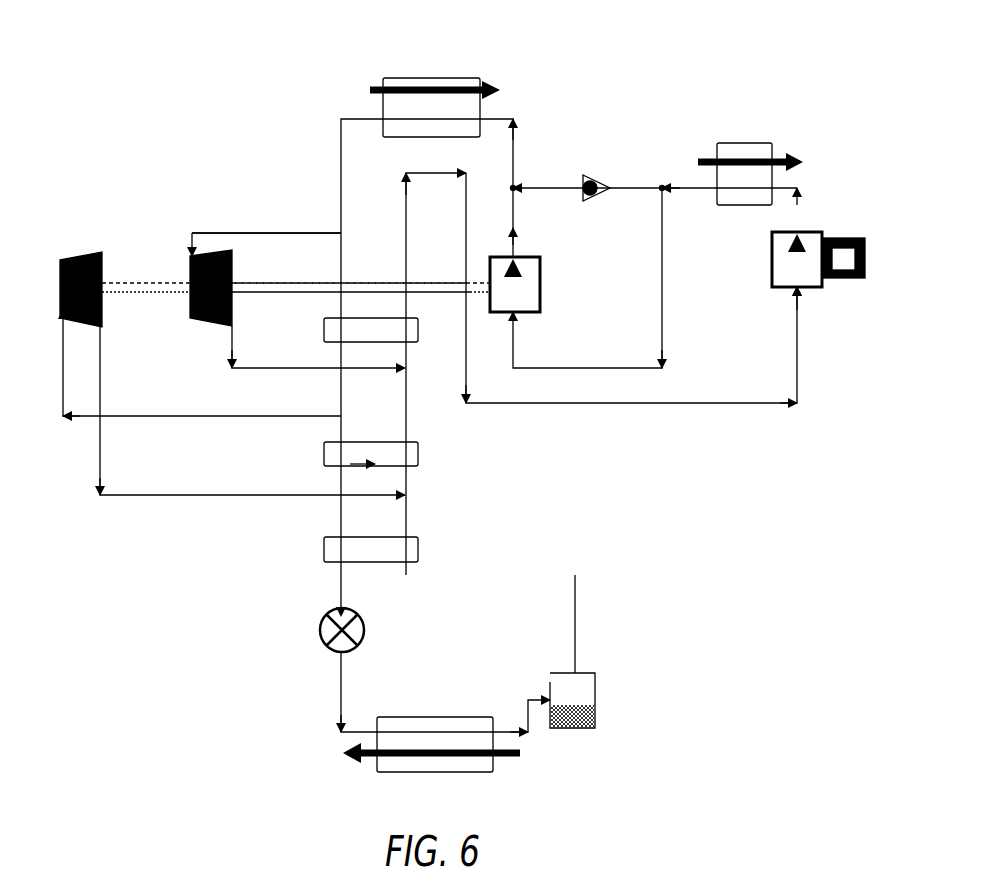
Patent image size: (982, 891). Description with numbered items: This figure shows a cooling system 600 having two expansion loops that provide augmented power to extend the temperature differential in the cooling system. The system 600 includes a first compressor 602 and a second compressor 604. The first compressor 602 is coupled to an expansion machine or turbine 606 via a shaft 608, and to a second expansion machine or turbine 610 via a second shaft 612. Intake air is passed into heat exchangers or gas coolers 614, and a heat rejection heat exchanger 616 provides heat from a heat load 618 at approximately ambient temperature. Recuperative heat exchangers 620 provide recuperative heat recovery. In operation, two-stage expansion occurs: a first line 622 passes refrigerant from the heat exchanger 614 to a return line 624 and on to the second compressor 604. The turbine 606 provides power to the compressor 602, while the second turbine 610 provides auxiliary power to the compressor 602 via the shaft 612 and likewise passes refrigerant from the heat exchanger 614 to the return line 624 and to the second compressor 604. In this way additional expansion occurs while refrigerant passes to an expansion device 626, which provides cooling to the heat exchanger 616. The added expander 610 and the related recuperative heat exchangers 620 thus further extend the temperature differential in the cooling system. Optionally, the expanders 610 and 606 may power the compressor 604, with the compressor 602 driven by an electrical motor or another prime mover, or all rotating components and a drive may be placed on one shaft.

The system 600 is at (724, 75).
The first compressor 602 is at (538, 314).
The second compressor 604 is at (812, 290).
The turbine 606 is at (203, 322).
The shaft 608 is at (277, 294).
The second turbine 610 is at (78, 256).
The second shaft 612 is at (140, 281).
The heat exchanger 614 is at (480, 78).
The heat rejection heat exchanger 616 is at (478, 772).
The heat load 618 is at (518, 757).
The recuperative heat exchanger 620 is at (418, 350).
The first line 622 is at (262, 230).
The return line 624 is at (407, 247).
The expansion device 626 is at (318, 622).